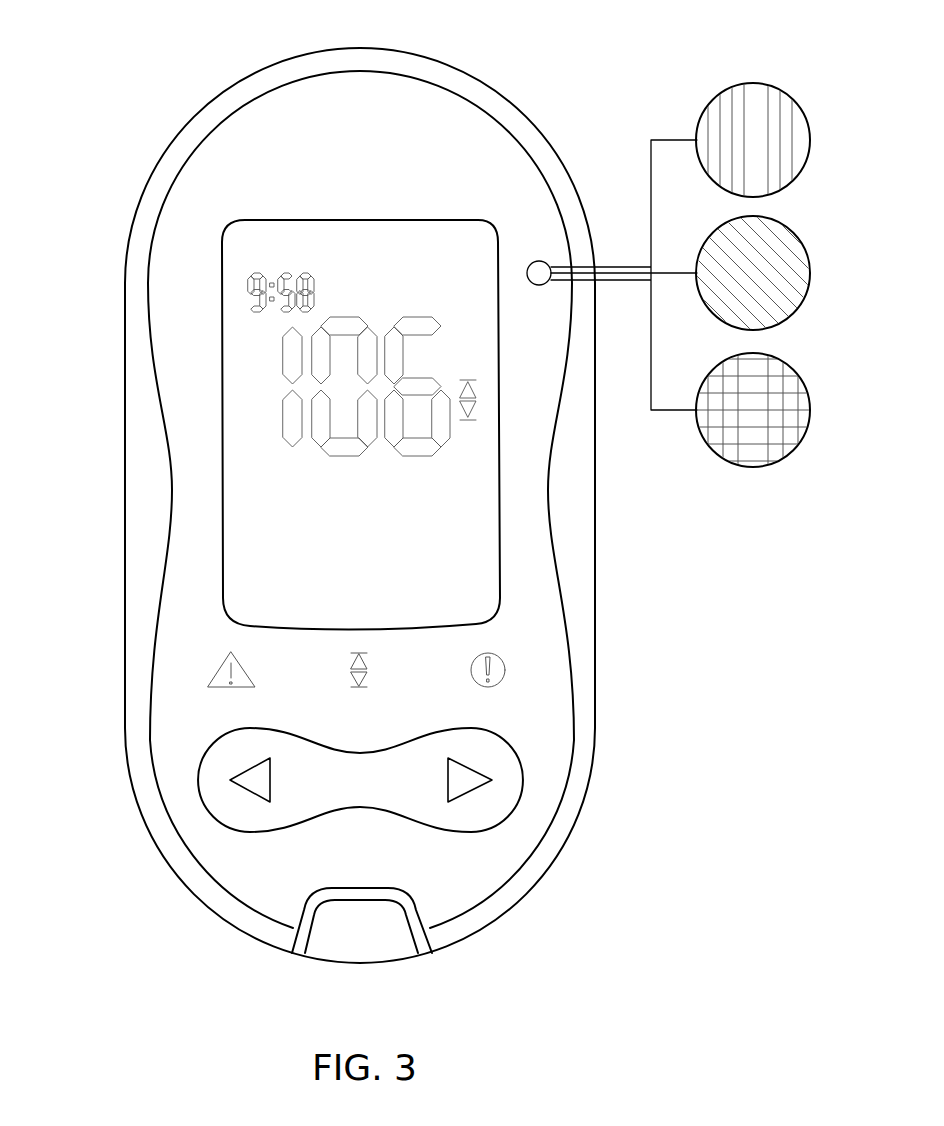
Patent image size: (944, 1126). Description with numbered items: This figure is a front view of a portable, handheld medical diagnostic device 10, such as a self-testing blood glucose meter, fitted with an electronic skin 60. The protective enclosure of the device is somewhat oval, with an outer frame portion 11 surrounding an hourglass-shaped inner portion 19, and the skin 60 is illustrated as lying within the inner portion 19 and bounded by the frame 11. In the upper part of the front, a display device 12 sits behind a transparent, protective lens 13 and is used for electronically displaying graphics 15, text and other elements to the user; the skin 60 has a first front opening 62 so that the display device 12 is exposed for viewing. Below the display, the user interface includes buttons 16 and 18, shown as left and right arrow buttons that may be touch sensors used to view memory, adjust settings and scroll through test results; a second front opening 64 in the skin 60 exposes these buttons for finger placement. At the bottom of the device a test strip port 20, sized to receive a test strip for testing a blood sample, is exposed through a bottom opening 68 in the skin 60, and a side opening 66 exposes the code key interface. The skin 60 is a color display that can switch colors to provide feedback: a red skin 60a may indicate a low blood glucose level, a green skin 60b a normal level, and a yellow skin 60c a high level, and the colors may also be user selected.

The medical diagnostic device 10 is at (142, 70).
The side opening 66 is at (118, 183).
The outer frame portion 11 is at (136, 452).
The display device 12 is at (470, 562).
The transparent, protective lens 13 is at (240, 577).
The graphics 15 is at (290, 352).
The button 16 is at (218, 757).
The button 18 is at (500, 757).
The inner portion 19 is at (548, 612).
The test strip port 20 is at (393, 963).
The skin 60 is at (518, 178).
The red skin 60a is at (799, 122).
The green skin 60b is at (799, 255).
The yellow skin 60c is at (799, 392).
The first front opening 62 is at (224, 295).
The second front opening 64 is at (265, 832).
The bottom opening 68 is at (404, 891).